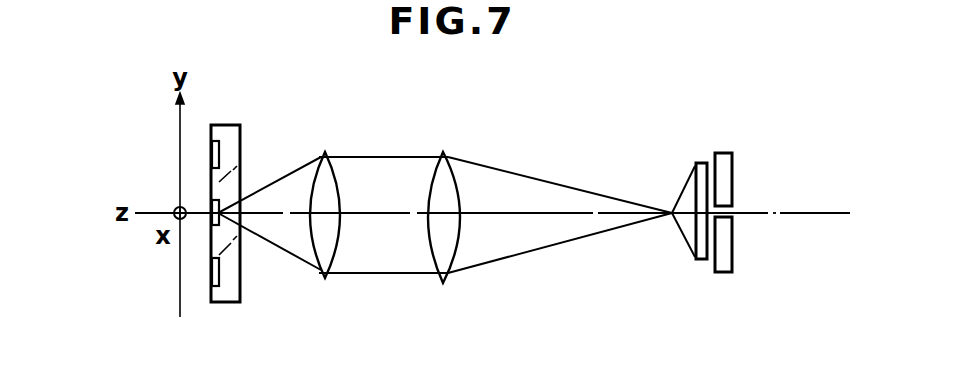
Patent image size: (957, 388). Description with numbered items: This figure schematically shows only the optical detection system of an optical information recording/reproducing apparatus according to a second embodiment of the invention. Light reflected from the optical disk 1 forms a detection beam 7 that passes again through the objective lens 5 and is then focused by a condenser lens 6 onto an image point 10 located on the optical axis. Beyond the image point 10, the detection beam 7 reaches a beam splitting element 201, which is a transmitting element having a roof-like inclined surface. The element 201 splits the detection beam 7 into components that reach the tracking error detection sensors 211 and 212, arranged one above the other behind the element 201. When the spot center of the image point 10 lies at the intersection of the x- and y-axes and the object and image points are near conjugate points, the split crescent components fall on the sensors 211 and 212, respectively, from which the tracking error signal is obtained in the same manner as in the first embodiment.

The optical disk 1 is at (230, 300).
The objective lens 5 is at (335, 172).
The condenser lens 6 is at (456, 175).
The detection beam 7 is at (628, 230).
The image point 10 is at (673, 210).
The beam splitting element 201 is at (700, 163).
The tracking error detection sensor 211 is at (727, 260).
The tracking error detection sensor 212 is at (728, 175).